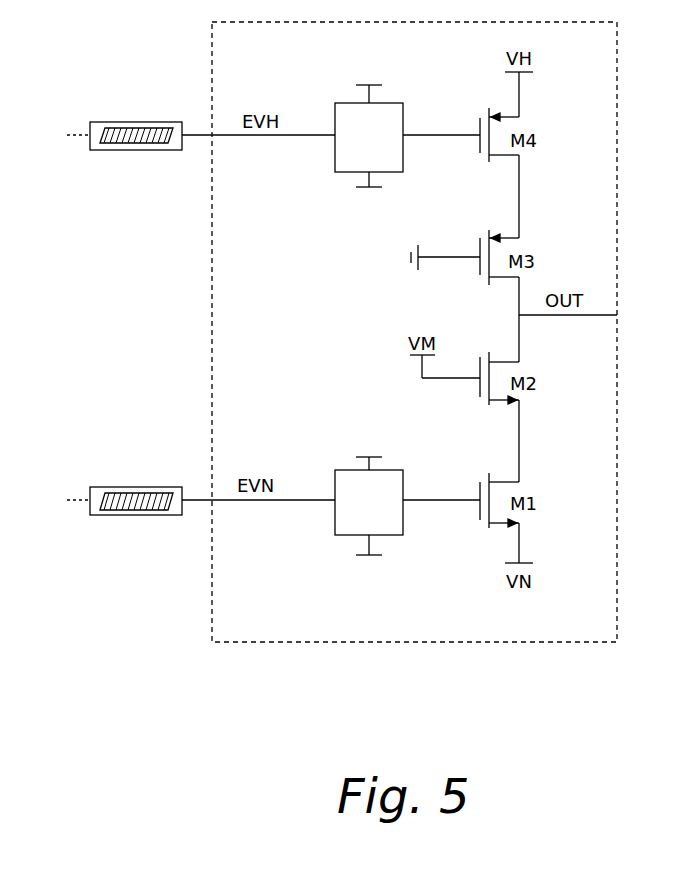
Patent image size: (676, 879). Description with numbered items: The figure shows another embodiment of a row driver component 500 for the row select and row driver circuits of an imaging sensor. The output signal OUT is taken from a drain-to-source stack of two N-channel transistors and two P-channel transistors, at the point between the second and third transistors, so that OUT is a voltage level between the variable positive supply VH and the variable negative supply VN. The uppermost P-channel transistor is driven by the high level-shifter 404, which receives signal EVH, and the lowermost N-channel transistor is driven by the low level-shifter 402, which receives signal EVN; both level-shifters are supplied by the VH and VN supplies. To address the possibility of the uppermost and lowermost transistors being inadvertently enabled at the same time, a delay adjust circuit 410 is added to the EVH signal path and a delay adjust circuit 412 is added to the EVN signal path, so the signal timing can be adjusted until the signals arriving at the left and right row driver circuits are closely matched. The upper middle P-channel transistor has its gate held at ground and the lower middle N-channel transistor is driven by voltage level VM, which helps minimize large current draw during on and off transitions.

The row driver component 500 is at (280, 630).
The delay adjust circuit 410 is at (125, 143).
The delay adjust circuit 412 is at (125, 510).
The high level-shifter 404 is at (338, 163).
The low level-shifter 402 is at (340, 483).